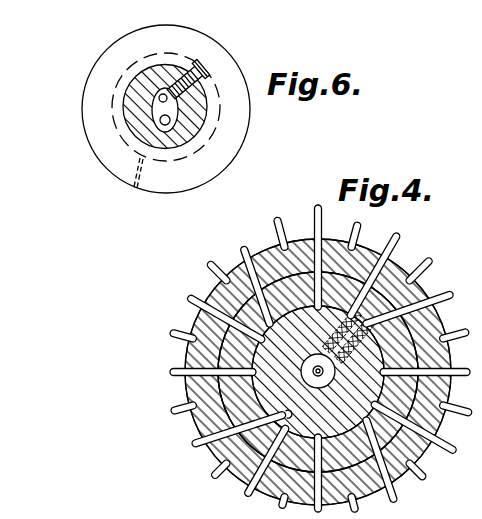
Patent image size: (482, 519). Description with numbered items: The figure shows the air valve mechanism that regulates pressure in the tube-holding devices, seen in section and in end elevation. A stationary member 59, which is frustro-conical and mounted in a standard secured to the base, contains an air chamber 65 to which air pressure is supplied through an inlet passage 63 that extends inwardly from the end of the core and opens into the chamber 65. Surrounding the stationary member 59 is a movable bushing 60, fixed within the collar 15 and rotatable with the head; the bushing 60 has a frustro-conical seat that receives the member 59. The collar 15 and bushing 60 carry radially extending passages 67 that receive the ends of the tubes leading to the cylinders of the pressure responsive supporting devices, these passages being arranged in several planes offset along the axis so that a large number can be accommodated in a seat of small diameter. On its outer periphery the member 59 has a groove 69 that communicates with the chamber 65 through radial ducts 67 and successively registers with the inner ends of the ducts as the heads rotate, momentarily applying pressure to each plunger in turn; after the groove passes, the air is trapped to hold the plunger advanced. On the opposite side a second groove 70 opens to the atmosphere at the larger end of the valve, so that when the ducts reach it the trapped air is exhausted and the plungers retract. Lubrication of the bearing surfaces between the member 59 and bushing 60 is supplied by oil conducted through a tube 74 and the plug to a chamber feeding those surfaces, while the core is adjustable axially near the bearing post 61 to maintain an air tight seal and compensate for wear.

In FIG. 4, the collar 15 is at (228, 287).
In FIG. 4, the stationary member 59 is at (409, 473).
In FIG. 4, the bushing 60 is at (252, 357).
In FIG. 4, the bearing post 61 is at (420, 310).
In FIG. 6, the inlet passage 63 is at (162, 124).
In FIG. 4, the air chamber 65 is at (302, 372).
In FIG. 6, the radially extending passages 67 is at (207, 86).
In FIG. 6, the groove 69 is at (205, 67).
In FIG. 4, the groove 70 is at (285, 420).
In FIG. 6, the tube 74 is at (160, 100).